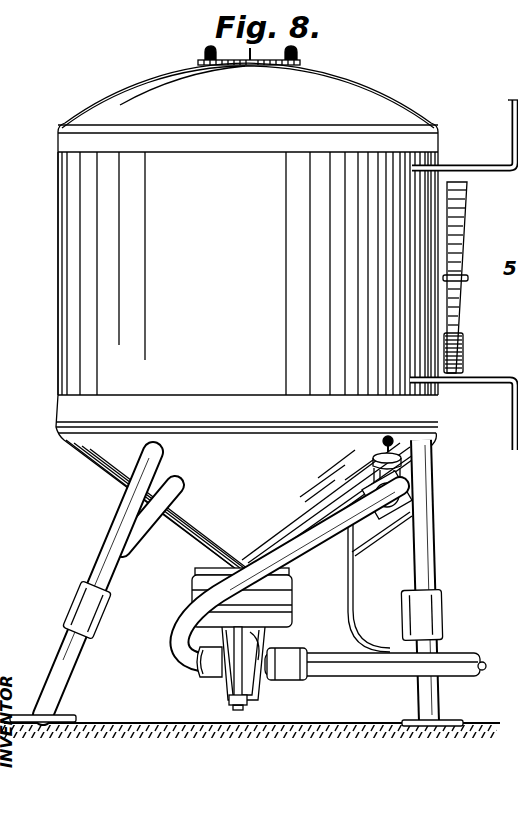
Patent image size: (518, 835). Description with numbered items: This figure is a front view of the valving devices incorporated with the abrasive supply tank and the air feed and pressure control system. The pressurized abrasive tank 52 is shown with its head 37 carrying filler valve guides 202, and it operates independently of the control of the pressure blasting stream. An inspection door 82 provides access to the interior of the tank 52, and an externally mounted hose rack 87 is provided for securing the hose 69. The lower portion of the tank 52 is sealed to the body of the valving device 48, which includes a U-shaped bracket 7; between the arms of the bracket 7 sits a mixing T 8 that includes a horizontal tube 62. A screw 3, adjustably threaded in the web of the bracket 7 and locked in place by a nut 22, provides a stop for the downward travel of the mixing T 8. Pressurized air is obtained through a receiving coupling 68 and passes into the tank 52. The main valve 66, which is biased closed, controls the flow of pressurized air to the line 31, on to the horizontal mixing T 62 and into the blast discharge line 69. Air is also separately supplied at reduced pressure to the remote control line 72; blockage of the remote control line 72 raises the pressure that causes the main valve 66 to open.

The screw 3 is at (234, 702).
The U-shaped bracket 7 is at (270, 688).
The mixing T 8 is at (206, 673).
The nut 22 is at (256, 698).
The line 31 is at (342, 522).
The head 37 is at (152, 92).
The valving device 48 is at (280, 585).
The abrasive tank 52 is at (85, 256).
The horizontal tube 62 is at (303, 680).
The main valve 66 is at (405, 448).
The receiving coupling 68 is at (410, 490).
The blast discharge line 69 is at (457, 676).
The remote control line 72 is at (440, 655).
The inspection door 82 is at (456, 334).
The hose rack 87 is at (474, 173).
The filler valve guides 202 is at (222, 58).